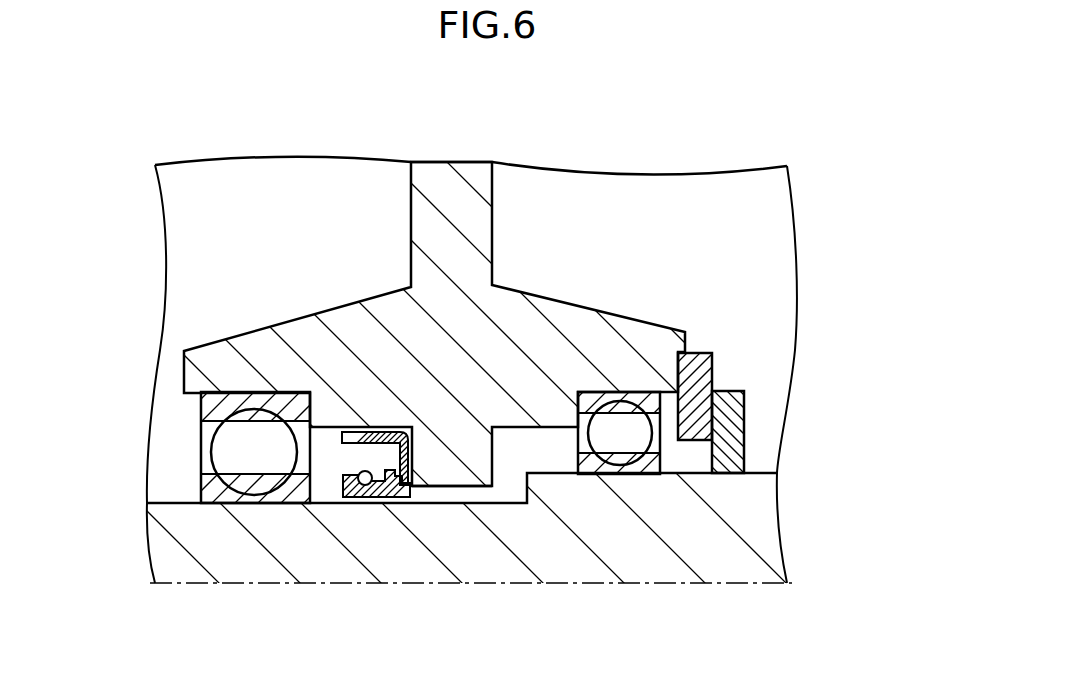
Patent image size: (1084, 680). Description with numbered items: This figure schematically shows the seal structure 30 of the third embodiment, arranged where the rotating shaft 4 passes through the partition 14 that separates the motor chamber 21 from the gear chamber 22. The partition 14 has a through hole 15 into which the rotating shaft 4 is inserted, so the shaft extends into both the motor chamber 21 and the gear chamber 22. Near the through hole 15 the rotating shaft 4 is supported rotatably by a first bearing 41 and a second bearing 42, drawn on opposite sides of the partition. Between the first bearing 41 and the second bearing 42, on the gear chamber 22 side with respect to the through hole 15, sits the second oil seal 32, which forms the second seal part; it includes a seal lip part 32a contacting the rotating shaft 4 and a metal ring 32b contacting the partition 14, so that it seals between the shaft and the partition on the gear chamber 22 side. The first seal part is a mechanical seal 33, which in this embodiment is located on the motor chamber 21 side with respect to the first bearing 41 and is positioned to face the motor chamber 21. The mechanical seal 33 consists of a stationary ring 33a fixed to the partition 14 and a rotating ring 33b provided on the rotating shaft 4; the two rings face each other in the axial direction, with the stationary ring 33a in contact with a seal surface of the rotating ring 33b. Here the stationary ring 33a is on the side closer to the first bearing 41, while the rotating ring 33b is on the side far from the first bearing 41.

The rotating shaft 4 is at (750, 520).
The partition 14 is at (457, 215).
The through hole 15 is at (448, 487).
The motor chamber 21 is at (691, 229).
The gear chamber 22 is at (256, 229).
The seal structure 30 is at (662, 119).
The second oil seal 32 is at (405, 461).
The seal lip part 32a is at (345, 484).
The metal ring 32b is at (381, 430).
The mechanical seal 33 is at (760, 406).
The stationary ring 33a is at (702, 369).
The rotating ring 33b is at (732, 430).
The first bearing 41 is at (577, 443).
The second bearing 42 is at (199, 449).